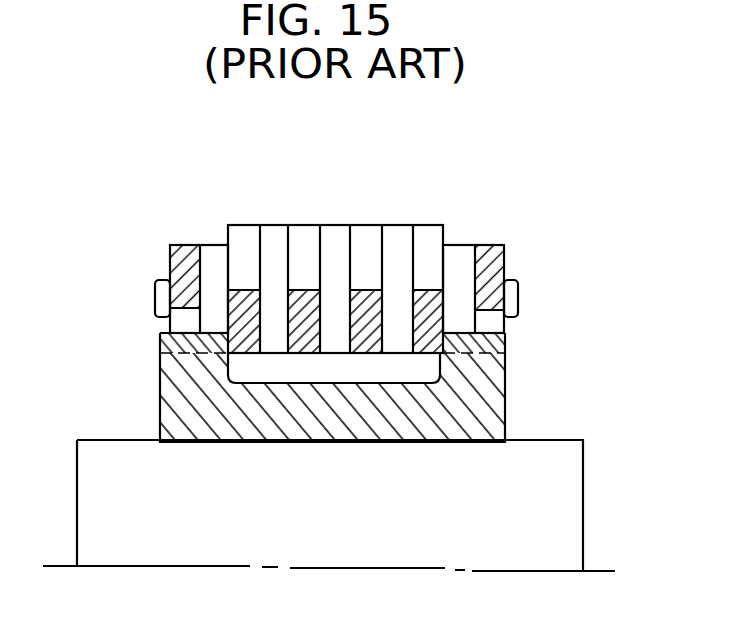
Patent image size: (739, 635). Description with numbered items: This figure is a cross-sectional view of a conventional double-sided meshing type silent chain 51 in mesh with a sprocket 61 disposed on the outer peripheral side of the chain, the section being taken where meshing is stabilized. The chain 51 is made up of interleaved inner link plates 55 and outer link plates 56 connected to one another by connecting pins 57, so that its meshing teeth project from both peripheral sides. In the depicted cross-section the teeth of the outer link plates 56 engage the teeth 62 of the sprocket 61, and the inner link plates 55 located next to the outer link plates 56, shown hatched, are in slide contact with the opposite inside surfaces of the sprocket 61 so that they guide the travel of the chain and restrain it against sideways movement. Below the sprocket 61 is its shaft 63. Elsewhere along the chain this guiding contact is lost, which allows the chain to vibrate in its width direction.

The double-sided meshing type silent chain 51 is at (363, 216).
The inner link plates 55 is at (245, 233).
The outer link plates 56 is at (215, 256).
The connecting pins 57 is at (518, 302).
The sprocket 61 is at (478, 405).
The teeth of the sprocket 62 is at (455, 355).
The shaft of the sprocket 63 is at (558, 508).